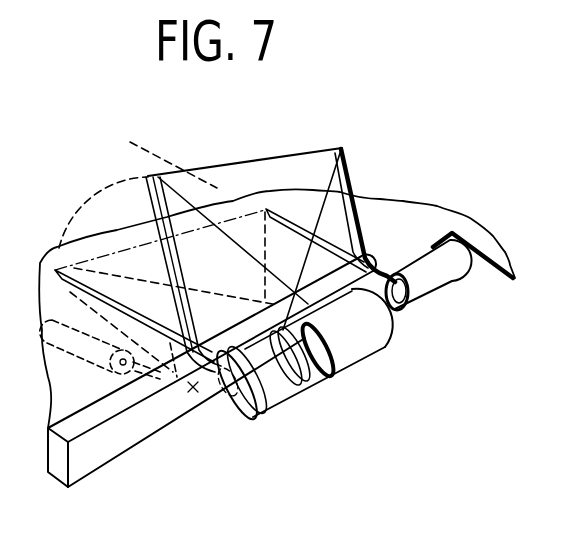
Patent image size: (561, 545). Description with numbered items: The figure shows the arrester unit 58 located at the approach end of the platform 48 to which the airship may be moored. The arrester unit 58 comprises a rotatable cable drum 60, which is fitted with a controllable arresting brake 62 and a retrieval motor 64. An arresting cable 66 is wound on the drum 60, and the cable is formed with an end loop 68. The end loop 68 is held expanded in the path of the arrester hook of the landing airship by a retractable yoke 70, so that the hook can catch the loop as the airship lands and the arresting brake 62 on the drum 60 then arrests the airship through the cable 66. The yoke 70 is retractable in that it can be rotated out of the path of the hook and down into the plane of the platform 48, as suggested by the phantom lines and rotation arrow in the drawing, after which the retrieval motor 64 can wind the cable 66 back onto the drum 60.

The platform 48 is at (108, 403).
The arrester unit 58 is at (187, 158).
The rotatable cable drum 60 is at (380, 327).
The controllable arresting brake 62 is at (280, 387).
The retrieval motor 64 is at (438, 275).
The arresting cable 66 is at (323, 360).
The end loop 68 is at (267, 158).
The retractable yoke 70 is at (355, 190).